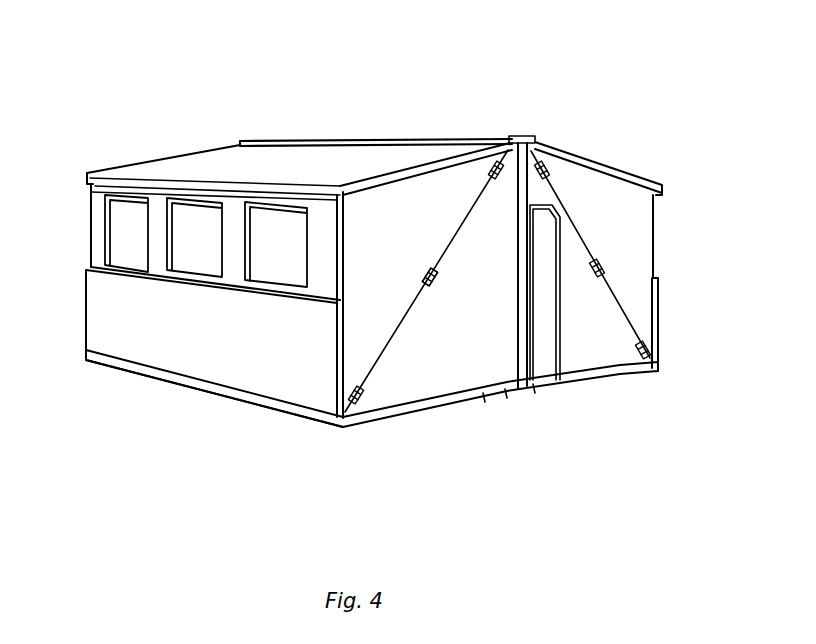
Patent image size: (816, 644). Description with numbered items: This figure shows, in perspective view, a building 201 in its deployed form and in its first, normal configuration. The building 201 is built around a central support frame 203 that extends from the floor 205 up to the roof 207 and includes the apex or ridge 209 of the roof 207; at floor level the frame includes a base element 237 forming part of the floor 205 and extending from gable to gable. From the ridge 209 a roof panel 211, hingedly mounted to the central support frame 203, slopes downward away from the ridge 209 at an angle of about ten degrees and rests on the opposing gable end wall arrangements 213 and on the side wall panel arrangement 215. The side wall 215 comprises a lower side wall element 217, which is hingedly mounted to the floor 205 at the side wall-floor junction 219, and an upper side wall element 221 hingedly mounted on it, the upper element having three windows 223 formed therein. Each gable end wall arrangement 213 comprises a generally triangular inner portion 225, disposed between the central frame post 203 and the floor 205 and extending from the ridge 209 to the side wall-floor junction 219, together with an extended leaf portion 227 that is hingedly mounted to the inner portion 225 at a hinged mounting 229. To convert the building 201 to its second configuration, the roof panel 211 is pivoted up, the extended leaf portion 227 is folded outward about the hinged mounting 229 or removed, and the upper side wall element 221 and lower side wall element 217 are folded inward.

The building 201 is at (207, 66).
The central support frame 203 is at (522, 198).
The floor 205 is at (420, 408).
The roof 207 is at (336, 100).
The ridge 209 is at (500, 138).
The roof panel 211 is at (186, 167).
The gable end wall arrangement 213 is at (653, 232).
The side wall panel arrangement 215 is at (157, 240).
The lower side wall element 217 is at (100, 333).
The side wall-floor junction 219 is at (178, 380).
The upper side wall element 221 is at (97, 218).
The windows 223 is at (122, 207).
The inner portion 225 is at (480, 384).
The extended leaf portion 227 is at (423, 192).
The hinged mounting 229 is at (437, 293).
The base element 237 is at (510, 411).